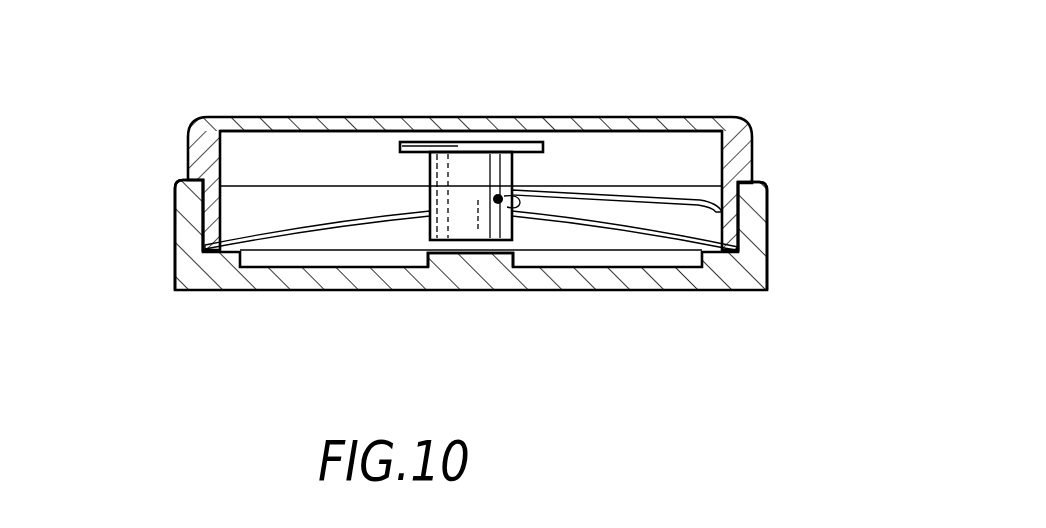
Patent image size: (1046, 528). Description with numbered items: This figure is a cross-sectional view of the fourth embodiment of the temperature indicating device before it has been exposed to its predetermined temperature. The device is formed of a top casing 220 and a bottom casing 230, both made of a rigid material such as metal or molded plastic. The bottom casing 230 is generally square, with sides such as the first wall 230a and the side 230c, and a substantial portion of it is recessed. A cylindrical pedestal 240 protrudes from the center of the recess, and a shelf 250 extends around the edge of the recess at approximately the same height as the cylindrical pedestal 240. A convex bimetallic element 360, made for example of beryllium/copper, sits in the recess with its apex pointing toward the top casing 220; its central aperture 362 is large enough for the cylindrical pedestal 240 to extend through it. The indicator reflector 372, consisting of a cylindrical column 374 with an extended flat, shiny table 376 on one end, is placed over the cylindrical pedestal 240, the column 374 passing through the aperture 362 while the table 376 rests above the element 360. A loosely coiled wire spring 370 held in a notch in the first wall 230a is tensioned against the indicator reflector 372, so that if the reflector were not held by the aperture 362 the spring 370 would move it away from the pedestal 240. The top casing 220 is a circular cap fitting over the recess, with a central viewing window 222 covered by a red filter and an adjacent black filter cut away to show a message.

The top casing 220 is at (792, 112).
The viewing window 222 is at (472, 148).
The bottom casing 230 is at (656, 320).
The first wall 230a is at (176, 236).
The side 230c is at (770, 232).
The cylindrical pedestal 240 is at (434, 274).
The shelf 250 is at (277, 258).
The bimetallic element 360 is at (590, 222).
The aperture 362 is at (537, 225).
The spring 370 is at (692, 192).
The indicator reflector 372 is at (553, 165).
The cylindrical column 374 is at (468, 168).
The table 376 is at (527, 144).